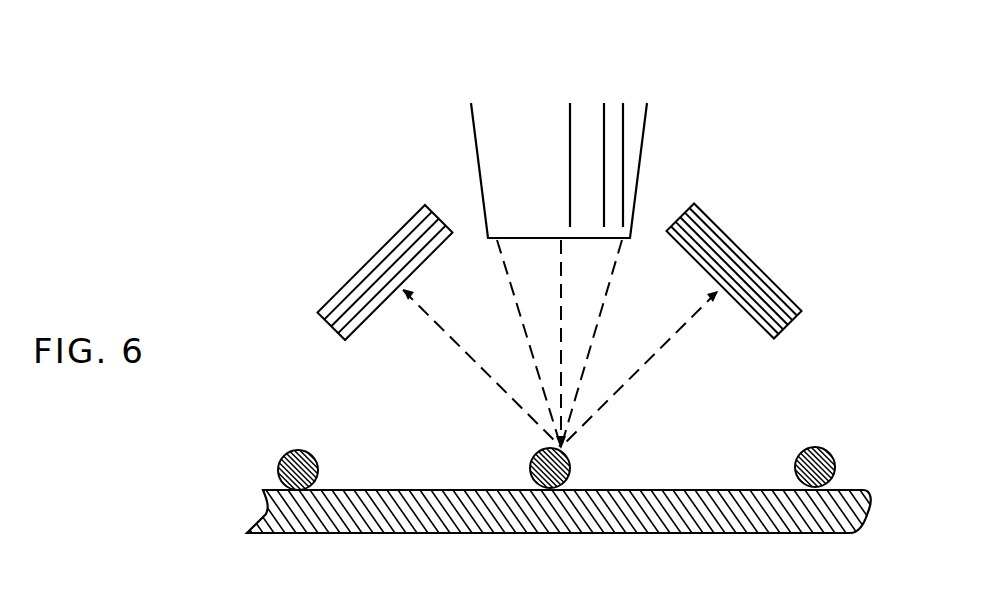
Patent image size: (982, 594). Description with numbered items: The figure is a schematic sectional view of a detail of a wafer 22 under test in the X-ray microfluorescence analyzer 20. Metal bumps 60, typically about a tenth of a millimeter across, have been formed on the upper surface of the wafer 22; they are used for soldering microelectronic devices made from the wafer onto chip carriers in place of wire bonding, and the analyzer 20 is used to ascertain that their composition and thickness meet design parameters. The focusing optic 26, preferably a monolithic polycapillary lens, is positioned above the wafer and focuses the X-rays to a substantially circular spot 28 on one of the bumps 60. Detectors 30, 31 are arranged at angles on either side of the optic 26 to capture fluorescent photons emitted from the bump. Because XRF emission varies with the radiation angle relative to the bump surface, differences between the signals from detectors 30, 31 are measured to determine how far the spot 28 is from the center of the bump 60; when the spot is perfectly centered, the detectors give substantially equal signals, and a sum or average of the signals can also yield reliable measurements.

The X-ray microfluorescence analyzer 20 is at (367, 122).
The wafer 22 is at (868, 505).
The focusing optic 26 is at (637, 197).
The spot 28 is at (572, 452).
The detector 30 is at (758, 280).
The detector 31 is at (362, 268).
The metal bumps 60 is at (310, 450).